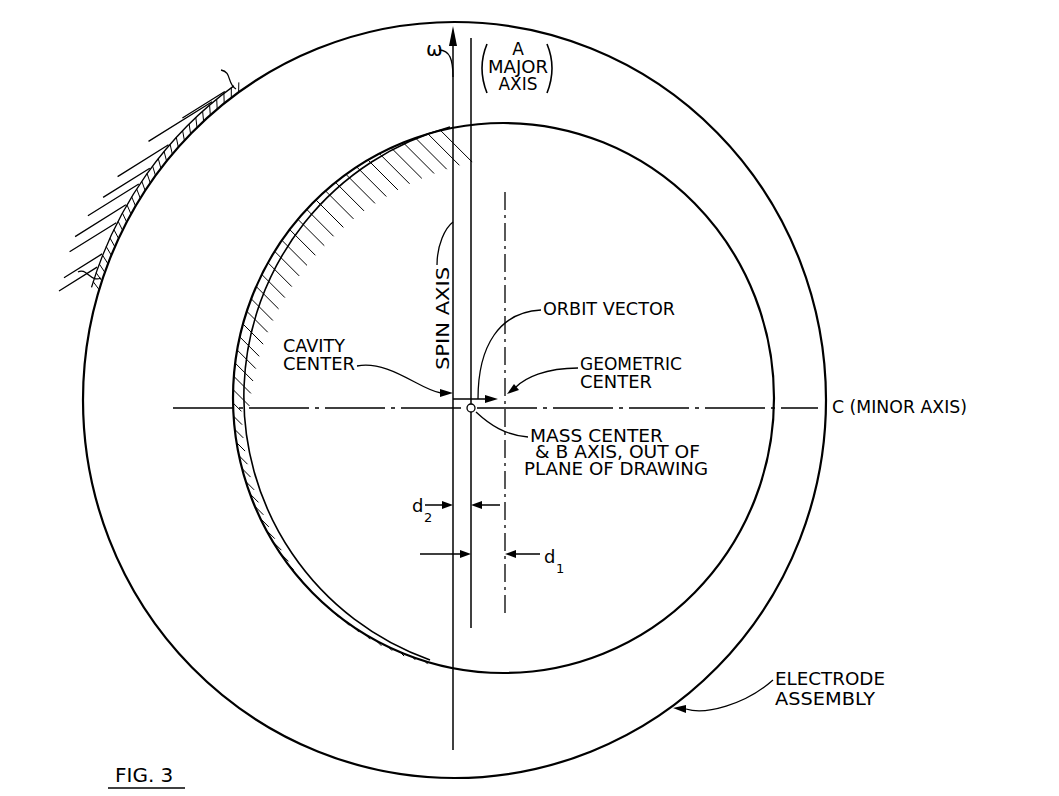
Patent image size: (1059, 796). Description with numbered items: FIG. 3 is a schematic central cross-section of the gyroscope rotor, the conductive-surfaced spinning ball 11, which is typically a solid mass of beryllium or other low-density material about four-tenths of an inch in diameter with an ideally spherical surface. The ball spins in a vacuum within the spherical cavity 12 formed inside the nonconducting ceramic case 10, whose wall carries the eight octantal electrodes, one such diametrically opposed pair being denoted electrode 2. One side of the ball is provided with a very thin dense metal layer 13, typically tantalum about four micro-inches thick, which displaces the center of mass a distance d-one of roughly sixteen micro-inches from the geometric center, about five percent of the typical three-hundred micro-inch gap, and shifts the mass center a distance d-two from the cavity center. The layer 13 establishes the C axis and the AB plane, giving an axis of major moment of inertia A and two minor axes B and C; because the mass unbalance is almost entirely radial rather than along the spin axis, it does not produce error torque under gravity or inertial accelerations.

The electrode 2 is at (240, 88).
The nonconducting ceramic case 10 is at (132, 165).
The spinning ball 11 is at (658, 168).
The spherical cavity 12 is at (97, 300).
The dense metal layer 13 is at (270, 263).